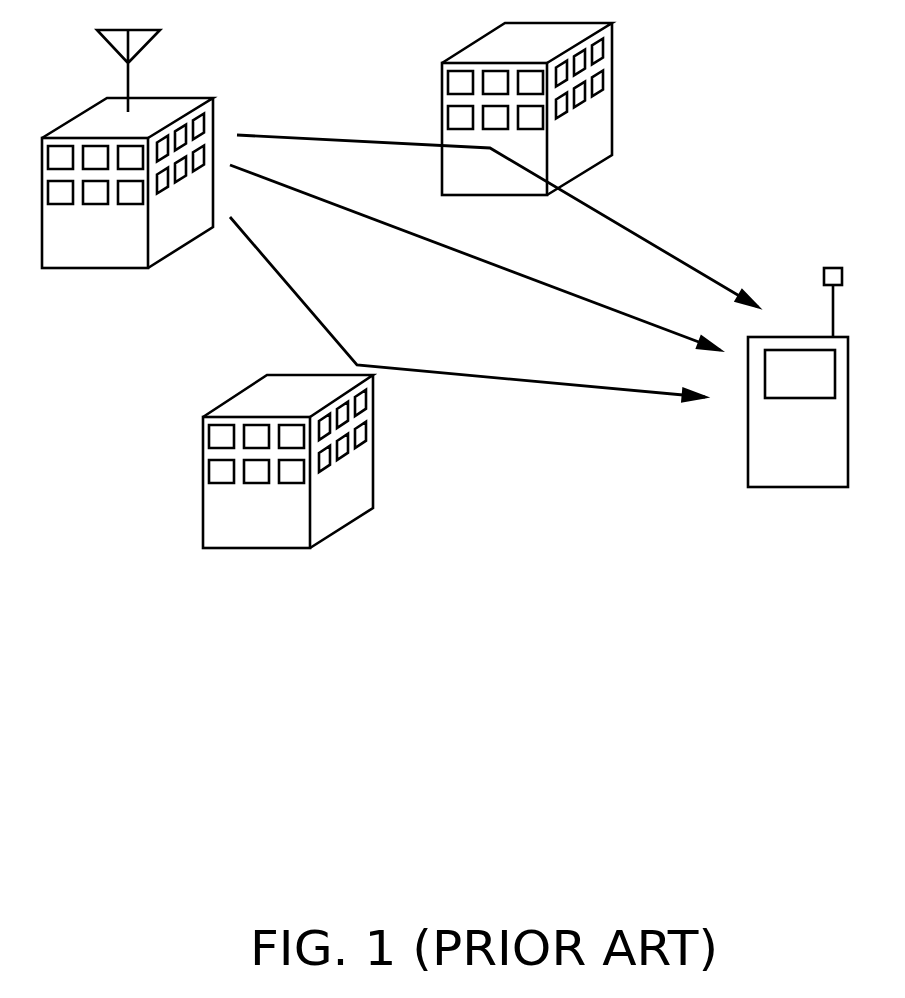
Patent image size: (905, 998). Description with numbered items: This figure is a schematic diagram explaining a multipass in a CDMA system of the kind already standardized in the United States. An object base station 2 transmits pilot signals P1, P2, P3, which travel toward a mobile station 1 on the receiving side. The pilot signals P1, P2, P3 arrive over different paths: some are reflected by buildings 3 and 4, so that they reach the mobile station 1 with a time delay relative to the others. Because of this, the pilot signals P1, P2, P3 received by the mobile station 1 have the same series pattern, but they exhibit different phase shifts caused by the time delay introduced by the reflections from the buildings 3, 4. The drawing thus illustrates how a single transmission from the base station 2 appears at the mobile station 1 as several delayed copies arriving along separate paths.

The mobile station 1 is at (823, 488).
The object base station 2 is at (165, 99).
The building 3 is at (613, 60).
The building 4 is at (375, 427).
The pilot signal P1 is at (530, 275).
The pilot signal P2 is at (623, 222).
The pilot signal P3 is at (440, 373).